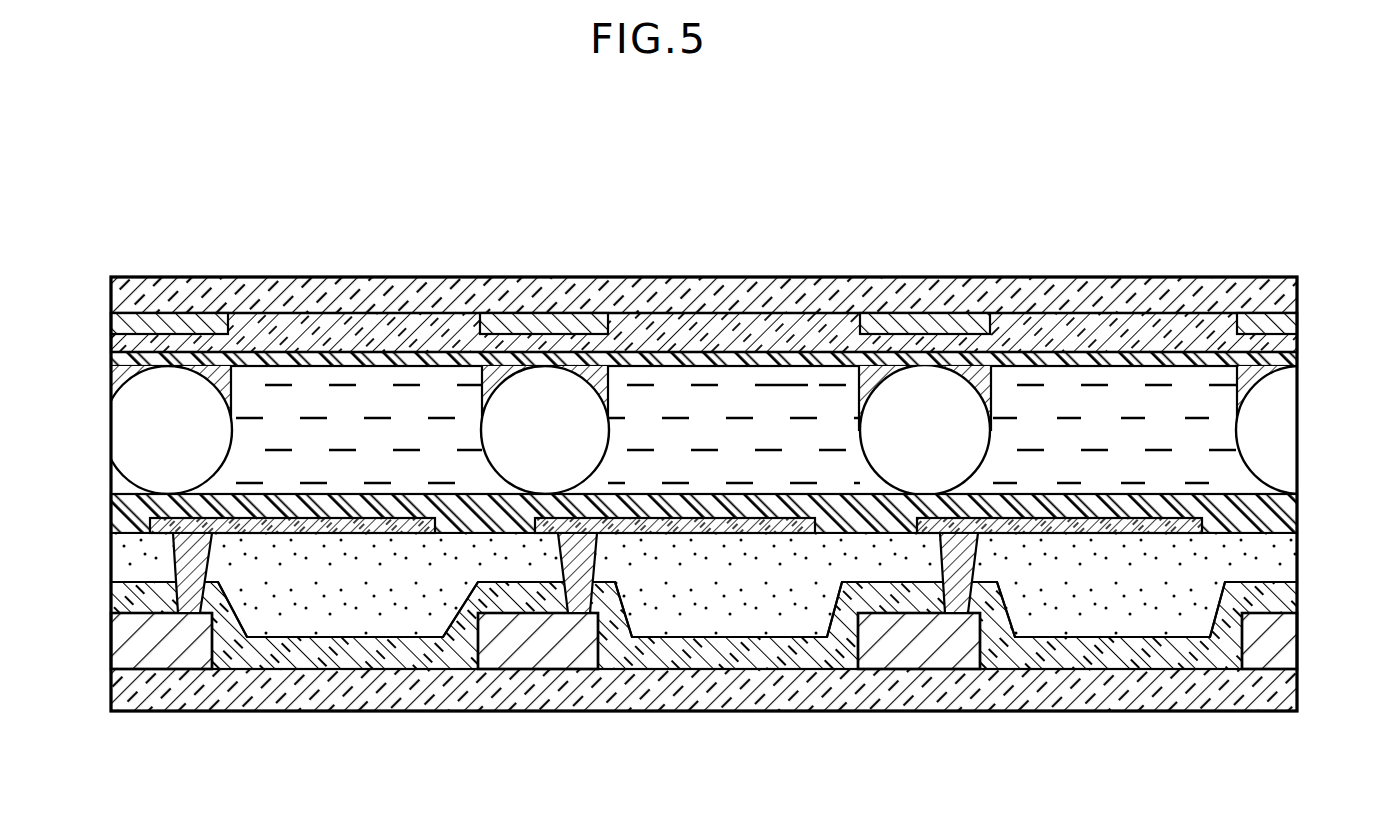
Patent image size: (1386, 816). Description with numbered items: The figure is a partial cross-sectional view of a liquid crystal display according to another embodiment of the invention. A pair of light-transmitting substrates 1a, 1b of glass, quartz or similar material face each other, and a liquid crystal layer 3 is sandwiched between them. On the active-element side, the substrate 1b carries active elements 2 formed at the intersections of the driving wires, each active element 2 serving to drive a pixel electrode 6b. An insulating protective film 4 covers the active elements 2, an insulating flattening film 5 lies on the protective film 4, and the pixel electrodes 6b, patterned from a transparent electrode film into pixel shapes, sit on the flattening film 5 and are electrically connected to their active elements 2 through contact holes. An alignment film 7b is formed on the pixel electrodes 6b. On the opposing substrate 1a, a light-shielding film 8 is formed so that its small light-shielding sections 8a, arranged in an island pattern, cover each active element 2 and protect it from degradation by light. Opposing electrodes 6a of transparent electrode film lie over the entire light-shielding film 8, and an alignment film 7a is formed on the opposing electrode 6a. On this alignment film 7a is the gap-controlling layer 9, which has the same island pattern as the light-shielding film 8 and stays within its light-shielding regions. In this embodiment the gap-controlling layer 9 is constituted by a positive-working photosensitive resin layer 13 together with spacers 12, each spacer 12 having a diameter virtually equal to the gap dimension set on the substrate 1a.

The light-transmitting substrate 1a is at (1193, 288).
The light-transmitting substrate 1b is at (1297, 693).
The active element 2 is at (195, 660).
The liquid crystal layer 3 is at (1063, 380).
The insulating protective film 4 is at (1288, 600).
The insulating flattening film 5 is at (1300, 555).
The opposing electrode 6a is at (1300, 313).
The pixel electrode 6b is at (395, 535).
The alignment film 7a is at (1300, 355).
The alignment film 7b is at (1300, 508).
The light-shielding film 8 is at (873, 312).
The light-shielding section 8a is at (577, 313).
The gap-controlling layer 9 is at (840, 407).
The spacer 12 is at (117, 420).
The positive-working photosensitive resin layer 13 is at (508, 378).